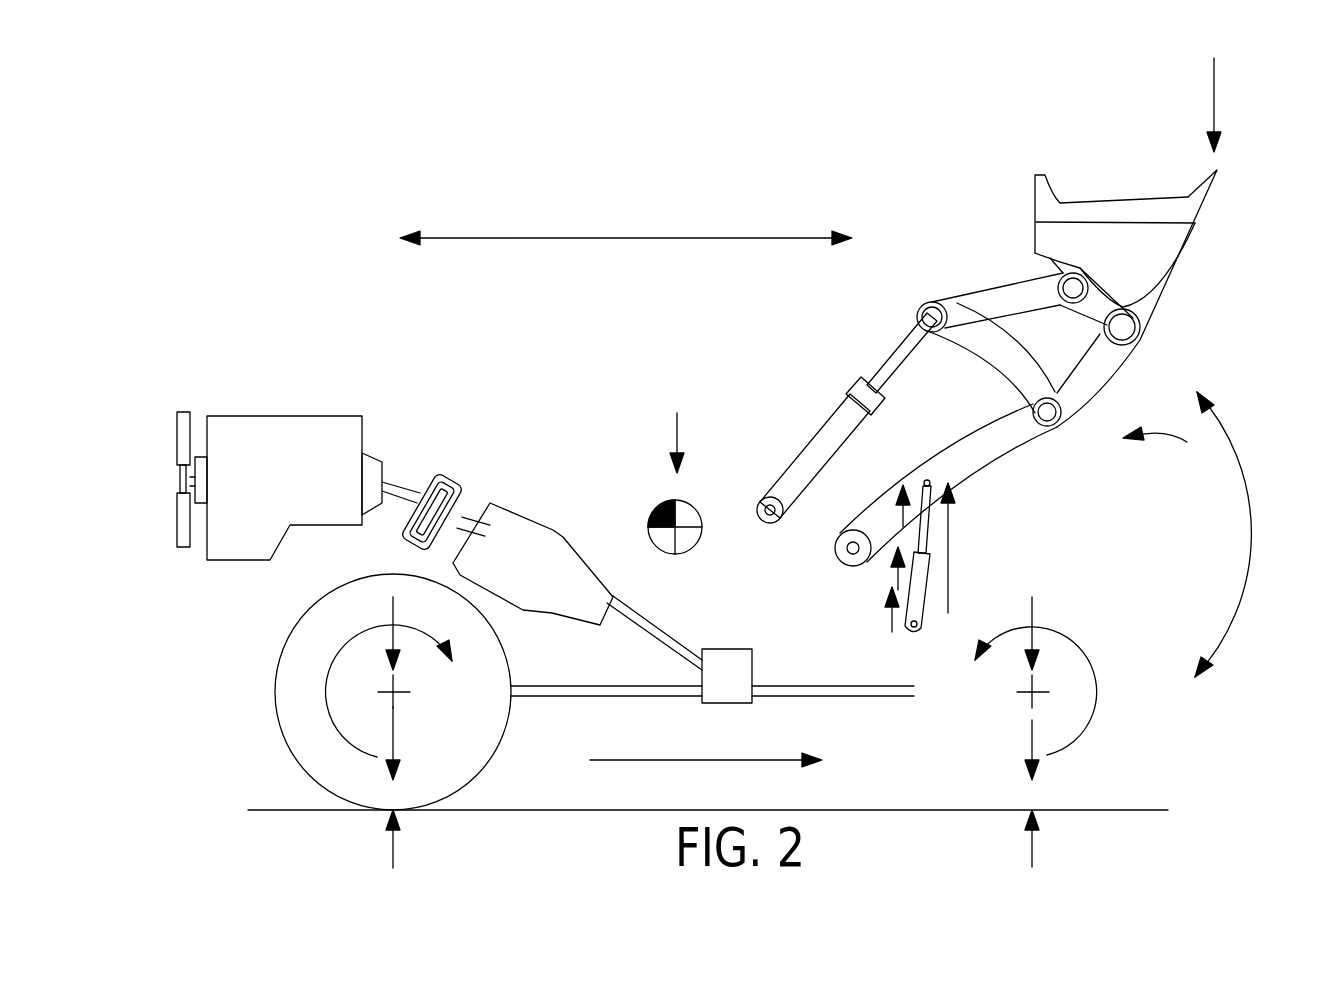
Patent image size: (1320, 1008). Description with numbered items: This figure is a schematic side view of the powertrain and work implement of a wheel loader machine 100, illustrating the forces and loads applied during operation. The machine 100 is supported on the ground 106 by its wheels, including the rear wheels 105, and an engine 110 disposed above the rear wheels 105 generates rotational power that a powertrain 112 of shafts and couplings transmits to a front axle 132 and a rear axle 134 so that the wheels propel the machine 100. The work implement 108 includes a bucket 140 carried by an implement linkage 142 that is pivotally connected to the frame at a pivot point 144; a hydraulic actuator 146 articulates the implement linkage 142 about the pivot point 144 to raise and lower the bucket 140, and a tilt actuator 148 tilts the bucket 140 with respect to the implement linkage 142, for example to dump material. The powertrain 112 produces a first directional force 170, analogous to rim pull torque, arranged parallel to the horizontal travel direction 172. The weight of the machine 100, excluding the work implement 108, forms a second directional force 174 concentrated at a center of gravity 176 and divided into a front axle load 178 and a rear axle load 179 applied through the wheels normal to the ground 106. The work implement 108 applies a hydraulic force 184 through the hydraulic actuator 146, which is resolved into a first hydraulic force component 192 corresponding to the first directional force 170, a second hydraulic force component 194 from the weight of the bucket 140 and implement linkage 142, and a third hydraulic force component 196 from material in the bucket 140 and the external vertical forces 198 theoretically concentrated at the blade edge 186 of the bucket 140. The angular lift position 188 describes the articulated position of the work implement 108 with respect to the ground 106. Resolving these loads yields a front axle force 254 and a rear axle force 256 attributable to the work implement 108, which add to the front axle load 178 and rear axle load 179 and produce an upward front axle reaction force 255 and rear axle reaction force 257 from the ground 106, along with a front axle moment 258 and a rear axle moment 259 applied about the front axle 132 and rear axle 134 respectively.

The machine 100 is at (302, 230).
The rear wheels 105 is at (300, 620).
The ground 106 is at (1137, 810).
The work implement 108 is at (1170, 448).
The engine 110 is at (283, 415).
The powertrain 112 is at (410, 445).
The front axle 132 is at (1040, 683).
The rear axle 134 is at (395, 695).
The bucket 140 is at (1035, 236).
The implement linkage 142 is at (967, 458).
The pivot point 144 is at (835, 550).
The hydraulic actuator 146 is at (910, 635).
The tilt actuator 148 is at (905, 345).
The first directional force 170 is at (706, 750).
The travel direction 172 is at (626, 229).
The second directional force 174 is at (678, 432).
The center of gravity 176 is at (655, 508).
The front axle load 178 is at (1030, 743).
The rear axle load 179 is at (393, 745).
The hydraulic force 184 is at (950, 568).
The blade edge 186 is at (1215, 202).
The angular lift position 188 is at (1250, 553).
The first hydraulic force component 192 is at (890, 610).
The second hydraulic force component 194 is at (895, 565).
The third hydraulic force component 196 is at (898, 512).
The external vertical forces 198 is at (1214, 95).
The front axle force 254 is at (1033, 603).
The front axle reaction force 255 is at (1032, 847).
The rear axle force 256 is at (387, 603).
The rear axle reaction force 257 is at (395, 853).
The front axle moment 258 is at (1063, 630).
The rear axle moment 259 is at (360, 632).